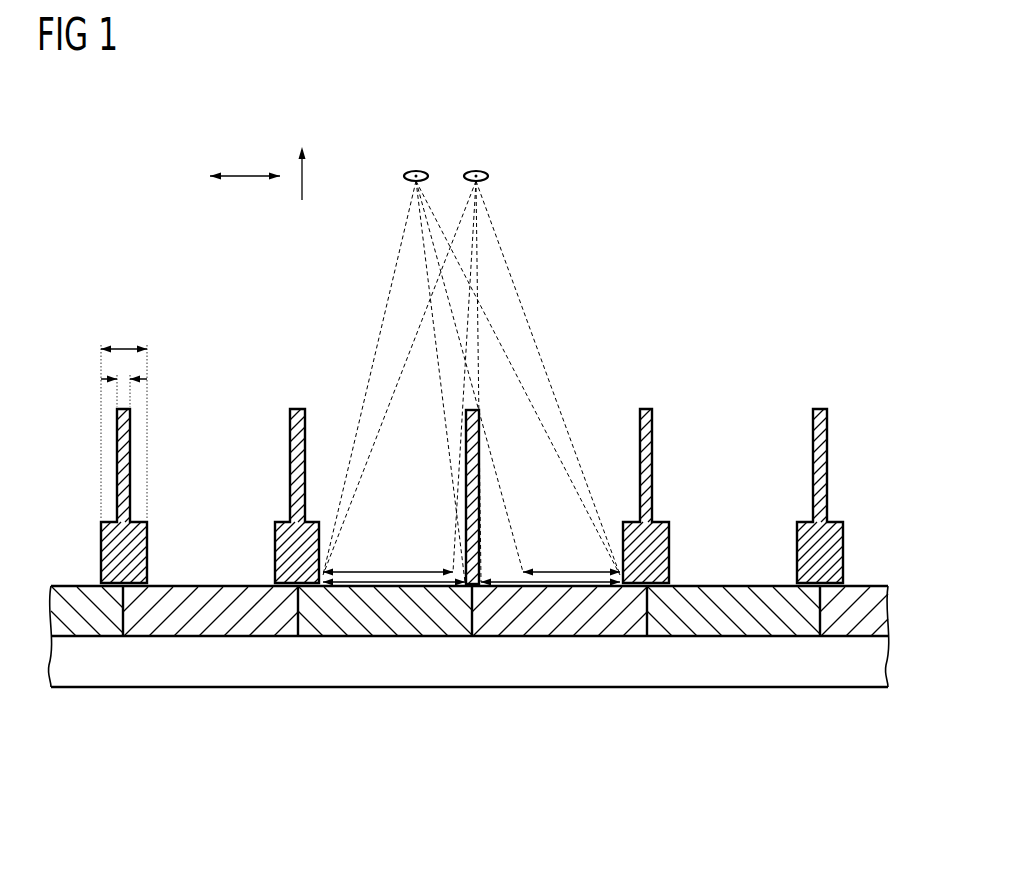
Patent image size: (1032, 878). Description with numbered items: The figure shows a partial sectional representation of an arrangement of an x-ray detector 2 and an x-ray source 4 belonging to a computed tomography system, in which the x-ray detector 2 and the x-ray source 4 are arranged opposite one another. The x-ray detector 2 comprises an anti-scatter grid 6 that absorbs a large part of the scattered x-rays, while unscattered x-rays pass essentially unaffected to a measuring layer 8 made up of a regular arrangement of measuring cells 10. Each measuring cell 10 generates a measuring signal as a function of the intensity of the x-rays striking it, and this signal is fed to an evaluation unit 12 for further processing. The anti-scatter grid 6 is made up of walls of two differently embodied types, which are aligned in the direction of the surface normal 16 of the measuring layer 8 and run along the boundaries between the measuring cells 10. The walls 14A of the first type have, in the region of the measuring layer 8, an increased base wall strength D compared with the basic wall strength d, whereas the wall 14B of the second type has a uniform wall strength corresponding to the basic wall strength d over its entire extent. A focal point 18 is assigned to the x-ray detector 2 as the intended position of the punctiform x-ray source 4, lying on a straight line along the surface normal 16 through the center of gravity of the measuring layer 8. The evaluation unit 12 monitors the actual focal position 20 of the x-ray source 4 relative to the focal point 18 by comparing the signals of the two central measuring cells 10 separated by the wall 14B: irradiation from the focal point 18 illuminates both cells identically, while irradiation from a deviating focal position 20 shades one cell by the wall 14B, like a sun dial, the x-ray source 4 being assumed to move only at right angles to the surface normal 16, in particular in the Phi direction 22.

The x-ray detector 2 is at (296, 775).
The x-ray source 4 is at (471, 325).
The anti-scatter grid 6 is at (718, 363).
The measuring layer 8 is at (684, 655).
The measuring cell 10 is at (90, 612).
The evaluation unit 12 is at (468, 688).
The wall of the first type 14A is at (120, 455).
The wall of the second type 14B is at (474, 482).
The surface normal 16 is at (303, 180).
The focal point 18 is at (477, 170).
The focal position 20 is at (416, 170).
The Phi direction 22 is at (243, 174).
The base wall strength D is at (122, 345).
The basic wall strength d is at (127, 378).